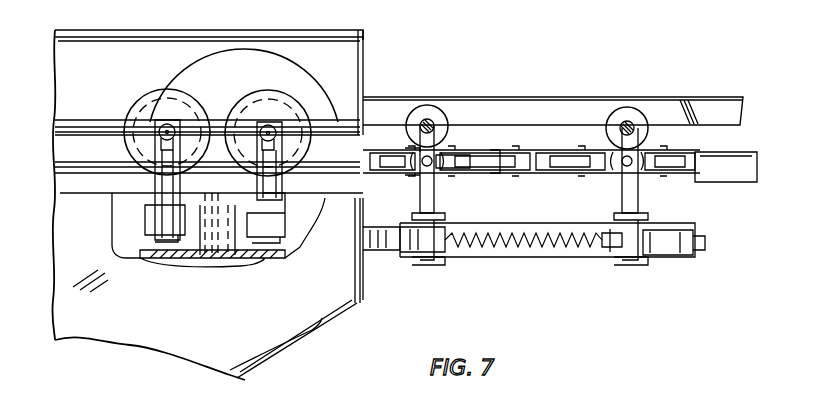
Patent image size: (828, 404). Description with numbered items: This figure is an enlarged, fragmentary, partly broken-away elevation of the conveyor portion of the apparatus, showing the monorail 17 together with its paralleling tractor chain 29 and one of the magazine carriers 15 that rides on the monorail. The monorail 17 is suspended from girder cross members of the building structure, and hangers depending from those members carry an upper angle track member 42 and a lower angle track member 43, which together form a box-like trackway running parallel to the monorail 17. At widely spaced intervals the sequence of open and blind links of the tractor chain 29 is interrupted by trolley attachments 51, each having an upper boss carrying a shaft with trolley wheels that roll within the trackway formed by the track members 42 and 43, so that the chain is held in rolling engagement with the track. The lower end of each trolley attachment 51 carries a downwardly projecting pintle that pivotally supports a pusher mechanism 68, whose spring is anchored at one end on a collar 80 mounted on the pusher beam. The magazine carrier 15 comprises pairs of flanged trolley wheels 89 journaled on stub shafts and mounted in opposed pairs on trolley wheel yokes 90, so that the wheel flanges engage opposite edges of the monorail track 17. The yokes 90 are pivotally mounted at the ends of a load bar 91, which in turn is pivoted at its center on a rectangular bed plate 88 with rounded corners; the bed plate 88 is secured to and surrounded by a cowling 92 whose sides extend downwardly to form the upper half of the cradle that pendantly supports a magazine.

The magazine carrier 15 is at (362, 284).
The monorail 17 is at (362, 66).
The tractor chain 29 is at (542, 185).
The upper angle track member 42 is at (722, 100).
The lower angle track member 43 is at (720, 152).
The trolley attachment 51 is at (436, 198).
The pusher mechanism 68 is at (376, 213).
The collar 80 is at (622, 257).
The bed plate 88 is at (252, 262).
The flanged trolley wheel 89 is at (183, 92).
The trolley wheel yoke 90 is at (208, 180).
The load bar 91 is at (289, 197).
The cowling 92 is at (318, 318).